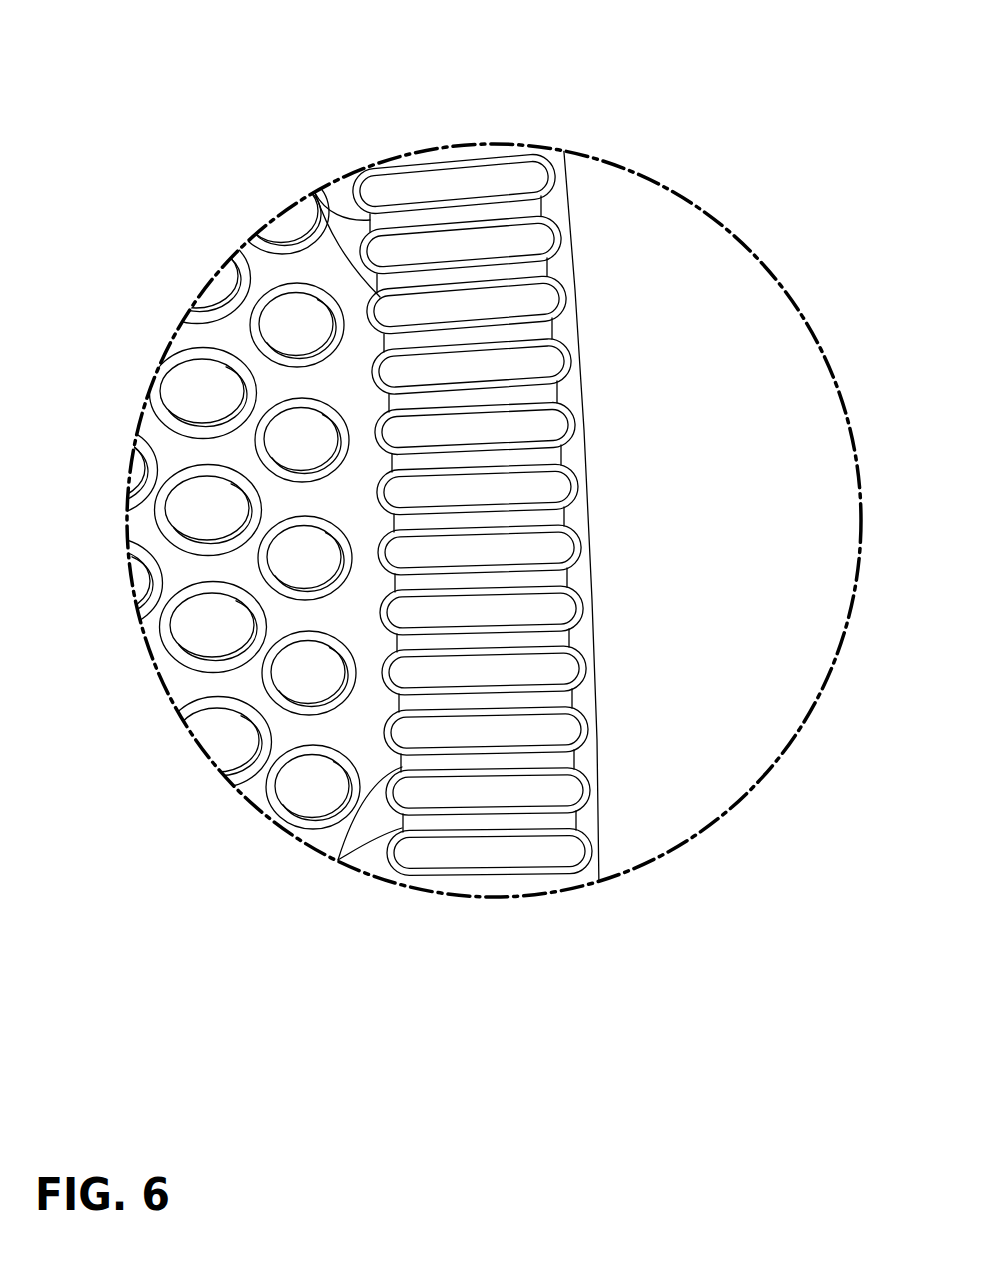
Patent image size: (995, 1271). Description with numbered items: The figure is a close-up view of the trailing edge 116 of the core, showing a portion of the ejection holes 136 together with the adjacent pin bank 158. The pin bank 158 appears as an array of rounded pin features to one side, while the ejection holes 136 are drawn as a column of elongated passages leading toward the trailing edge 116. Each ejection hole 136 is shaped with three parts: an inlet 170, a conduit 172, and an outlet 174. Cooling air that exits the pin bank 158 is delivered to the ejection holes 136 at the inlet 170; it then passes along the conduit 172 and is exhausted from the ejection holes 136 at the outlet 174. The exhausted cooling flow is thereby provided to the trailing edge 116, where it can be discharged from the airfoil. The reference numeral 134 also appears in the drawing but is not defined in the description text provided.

The trailing edge 116 is at (590, 513).
The circular protrusions 134 is at (183, 387).
The ejection holes 136 is at (493, 876).
The pin bank 158 is at (258, 780).
The inlet 170 is at (315, 193).
The conduit 172 is at (470, 263).
The outlet 174 is at (548, 268).